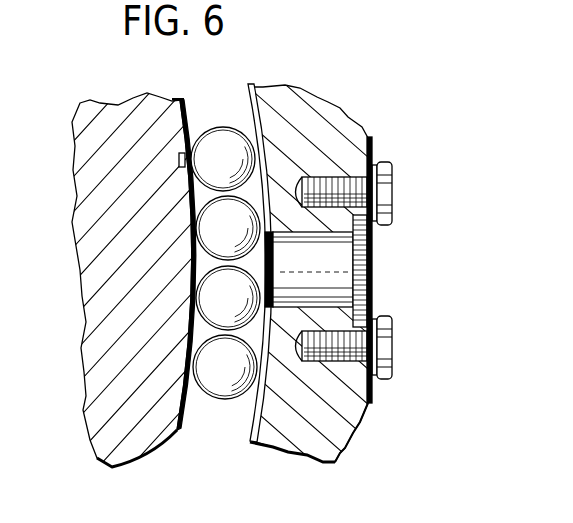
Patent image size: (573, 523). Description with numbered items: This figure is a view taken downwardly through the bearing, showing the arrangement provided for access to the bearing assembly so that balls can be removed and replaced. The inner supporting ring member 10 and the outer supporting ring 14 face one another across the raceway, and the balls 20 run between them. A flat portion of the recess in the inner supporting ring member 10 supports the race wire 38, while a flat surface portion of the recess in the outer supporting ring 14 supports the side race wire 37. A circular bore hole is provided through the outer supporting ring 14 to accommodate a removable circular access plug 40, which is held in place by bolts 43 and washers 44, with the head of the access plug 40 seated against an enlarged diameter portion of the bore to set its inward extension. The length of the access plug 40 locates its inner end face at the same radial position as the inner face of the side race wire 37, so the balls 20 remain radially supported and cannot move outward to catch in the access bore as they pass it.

The inner supporting ring member 10 is at (105, 333).
The outer supporting ring 14 is at (333, 408).
The balls 20 is at (225, 263).
The side race wire 37 is at (252, 419).
The race wire 38 is at (181, 417).
The access plug 40 is at (368, 272).
The bolts 43 is at (393, 201).
The washers 44 is at (373, 157).